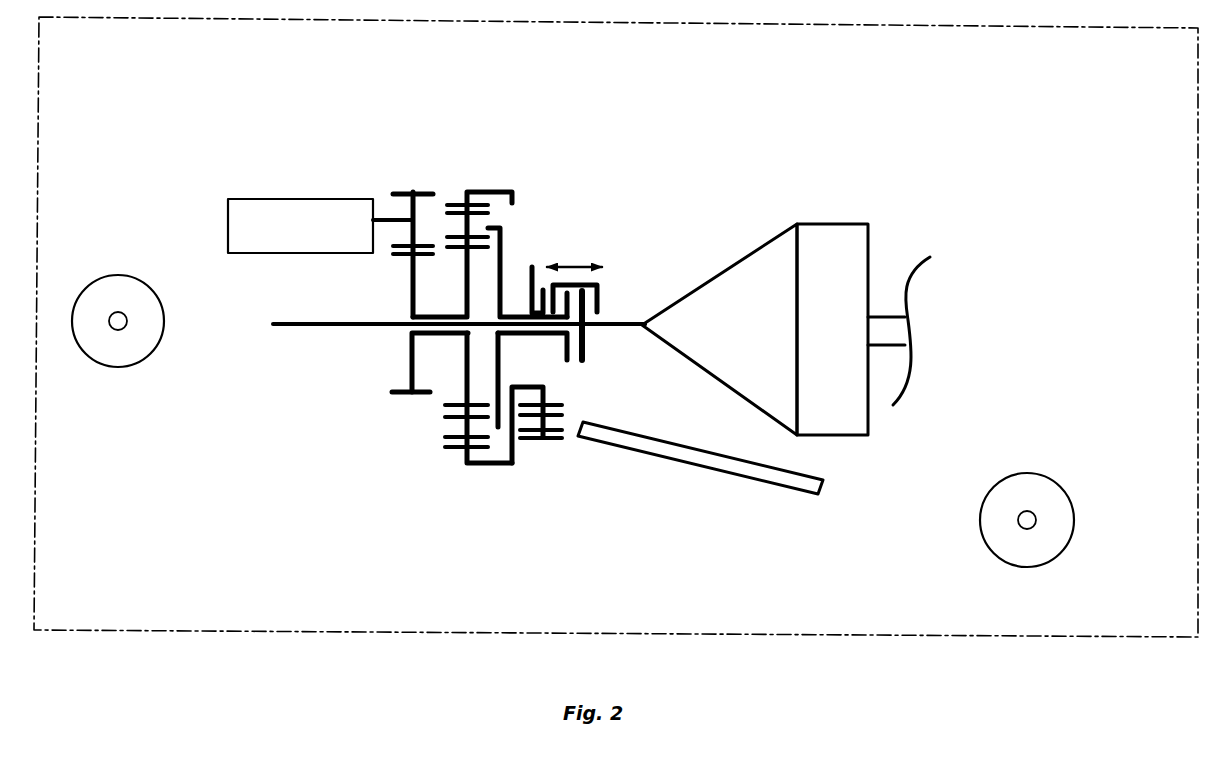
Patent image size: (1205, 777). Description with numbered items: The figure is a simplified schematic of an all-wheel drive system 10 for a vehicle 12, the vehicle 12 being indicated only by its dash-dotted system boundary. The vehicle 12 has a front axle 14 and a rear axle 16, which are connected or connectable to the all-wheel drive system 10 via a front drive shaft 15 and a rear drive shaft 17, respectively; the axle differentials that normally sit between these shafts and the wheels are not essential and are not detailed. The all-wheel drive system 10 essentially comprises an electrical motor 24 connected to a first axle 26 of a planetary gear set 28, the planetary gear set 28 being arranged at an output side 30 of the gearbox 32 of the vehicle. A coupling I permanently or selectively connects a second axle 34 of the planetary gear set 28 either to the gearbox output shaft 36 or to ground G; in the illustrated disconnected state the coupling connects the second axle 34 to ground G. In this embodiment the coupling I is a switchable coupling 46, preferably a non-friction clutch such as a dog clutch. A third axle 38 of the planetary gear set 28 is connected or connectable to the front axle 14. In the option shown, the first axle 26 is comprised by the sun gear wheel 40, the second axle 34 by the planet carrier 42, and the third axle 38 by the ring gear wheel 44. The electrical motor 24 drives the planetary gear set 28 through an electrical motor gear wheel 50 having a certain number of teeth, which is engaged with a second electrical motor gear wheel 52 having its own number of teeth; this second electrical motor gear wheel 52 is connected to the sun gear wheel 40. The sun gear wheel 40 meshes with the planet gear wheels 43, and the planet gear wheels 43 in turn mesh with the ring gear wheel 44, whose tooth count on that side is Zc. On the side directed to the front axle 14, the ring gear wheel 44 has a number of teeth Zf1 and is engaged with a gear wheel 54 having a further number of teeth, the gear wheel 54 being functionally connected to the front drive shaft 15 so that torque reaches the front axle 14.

The all-wheel drive system 10 is at (893, 145).
The vehicle 12 is at (1167, 92).
The front axle 14 is at (945, 530).
The front drive shaft 15 is at (743, 478).
The rear axle 16 is at (258, 317).
The rear drive shaft 17 is at (310, 324).
The electrical motor 24 is at (301, 241).
The first axle 26 is at (400, 363).
The planetary gear set 28 is at (497, 212).
The output side 30 is at (628, 300).
The gearbox 32 is at (833, 346).
The second axle 34 is at (517, 350).
The gearbox output shaft 36 is at (602, 330).
The third axle 38 is at (498, 475).
The sun gear wheel 40 is at (465, 185).
The planet carrier 42 is at (490, 463).
The planet gear wheels 43 is at (442, 407).
The ring gear wheel 44 is at (499, 430).
The switchable coupling 46 is at (590, 232).
The electrical motor gear wheel 50 is at (396, 178).
The second electrical motor gear wheel 52 is at (385, 264).
The gear wheel 54 is at (542, 442).
The ground G is at (532, 266).
The coupling I is at (570, 247).
The number of teeth of ring gear wheel Zc is at (438, 456).
The number of teeth of ring gear wheel directed to front axle Zf1 is at (548, 414).